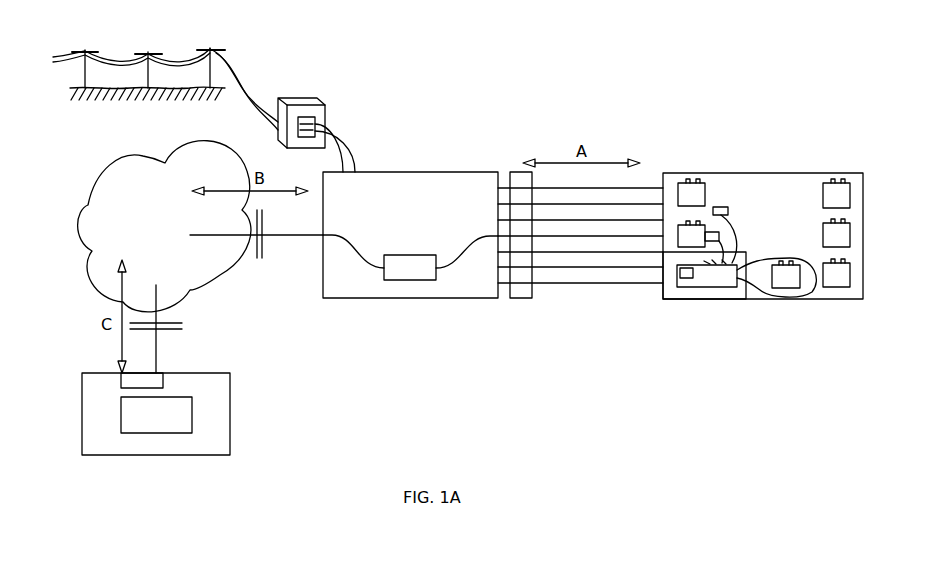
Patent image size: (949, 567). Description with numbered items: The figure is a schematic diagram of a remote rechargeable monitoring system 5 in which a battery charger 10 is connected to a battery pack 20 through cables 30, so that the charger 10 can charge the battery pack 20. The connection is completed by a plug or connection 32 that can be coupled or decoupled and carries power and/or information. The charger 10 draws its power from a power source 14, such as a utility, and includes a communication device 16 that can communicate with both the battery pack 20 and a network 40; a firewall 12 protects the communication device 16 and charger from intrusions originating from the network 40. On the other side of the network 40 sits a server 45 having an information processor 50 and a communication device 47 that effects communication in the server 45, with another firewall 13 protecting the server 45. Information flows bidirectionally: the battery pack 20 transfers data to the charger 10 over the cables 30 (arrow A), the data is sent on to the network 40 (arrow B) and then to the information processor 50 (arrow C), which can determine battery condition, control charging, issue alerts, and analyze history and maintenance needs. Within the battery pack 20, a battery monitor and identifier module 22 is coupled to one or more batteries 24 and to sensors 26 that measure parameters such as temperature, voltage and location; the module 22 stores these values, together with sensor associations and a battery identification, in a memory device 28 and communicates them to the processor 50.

The remote rechargeable monitoring system 5 is at (410, 200).
The battery charger 10 is at (419, 232).
The firewall 12 is at (265, 250).
The firewall 13 is at (182, 326).
The power source 14 is at (298, 104).
The communication device 16 is at (419, 277).
The battery pack 20 is at (792, 242).
The battery monitor and identifier module 22 is at (725, 280).
The batteries 24 is at (850, 237).
The sensors 26 is at (720, 232).
The memory device 28 is at (690, 280).
The cables 30 is at (580, 243).
The plug or connection 32 is at (521, 300).
The network 40 is at (168, 237).
The server 45 is at (179, 413).
The communication device 47 is at (133, 380).
The information processor 50 is at (166, 424).